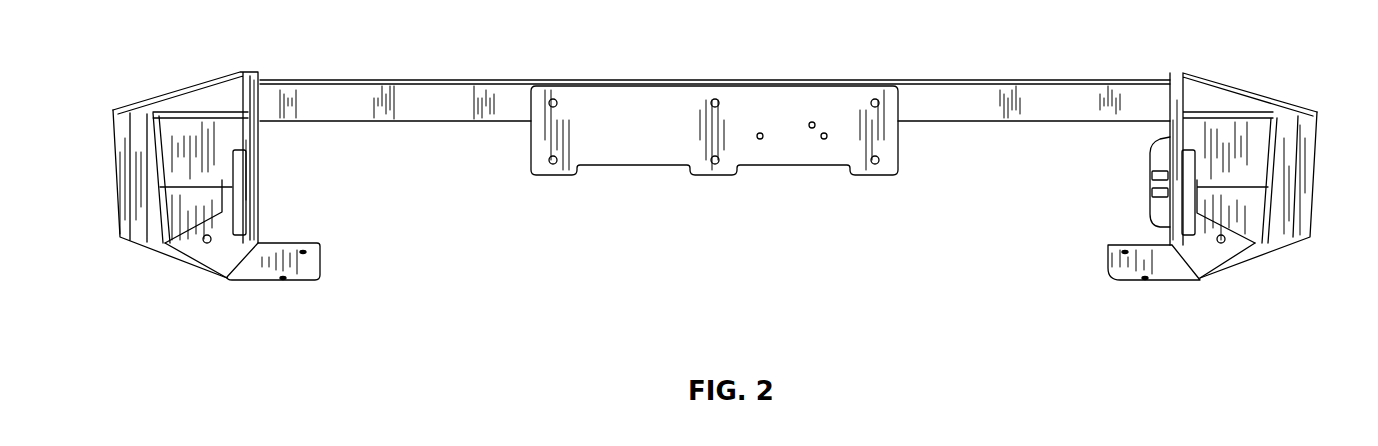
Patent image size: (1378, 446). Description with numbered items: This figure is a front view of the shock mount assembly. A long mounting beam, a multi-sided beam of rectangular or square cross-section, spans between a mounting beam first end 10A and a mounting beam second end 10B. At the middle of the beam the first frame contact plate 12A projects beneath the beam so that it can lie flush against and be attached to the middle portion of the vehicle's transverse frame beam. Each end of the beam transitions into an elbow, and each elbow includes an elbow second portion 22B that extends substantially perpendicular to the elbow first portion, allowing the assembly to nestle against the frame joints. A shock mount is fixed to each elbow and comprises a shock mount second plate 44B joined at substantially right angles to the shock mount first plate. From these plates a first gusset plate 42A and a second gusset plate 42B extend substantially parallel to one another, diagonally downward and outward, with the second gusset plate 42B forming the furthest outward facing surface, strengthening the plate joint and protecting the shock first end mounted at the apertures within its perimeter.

The mounting beam first end 10A is at (1093, 78).
The mounting beam second end 10B is at (340, 78).
The first frame contact plate 12A is at (658, 108).
The first gusset plate 42A is at (183, 213).
The second gusset plate 42B is at (118, 180).
The shock mount second plate 44B is at (213, 262).
The elbow second portion 22B is at (298, 275).